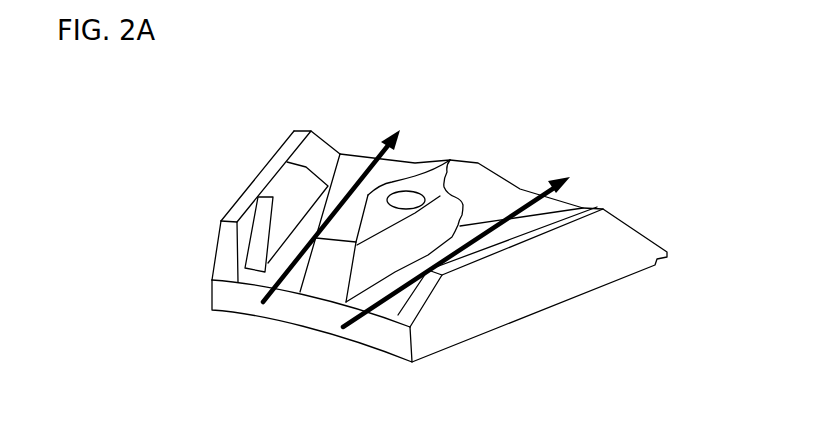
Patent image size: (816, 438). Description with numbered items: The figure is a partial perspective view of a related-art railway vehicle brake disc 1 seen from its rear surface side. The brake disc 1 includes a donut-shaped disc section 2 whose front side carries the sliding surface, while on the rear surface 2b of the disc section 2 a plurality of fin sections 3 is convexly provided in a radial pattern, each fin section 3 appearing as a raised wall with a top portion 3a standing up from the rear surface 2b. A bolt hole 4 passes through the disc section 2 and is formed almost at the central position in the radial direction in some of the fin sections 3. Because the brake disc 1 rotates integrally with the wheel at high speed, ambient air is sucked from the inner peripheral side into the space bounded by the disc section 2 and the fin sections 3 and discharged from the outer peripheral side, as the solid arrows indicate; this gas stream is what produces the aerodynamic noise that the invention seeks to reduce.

The brake disc 1 is at (259, 121).
The disc section 2 is at (378, 150).
The rear surface 2b is at (348, 155).
The fin section 3 is at (319, 130).
The rib top surface 3a is at (296, 130).
The bolt hole 4 is at (413, 191).